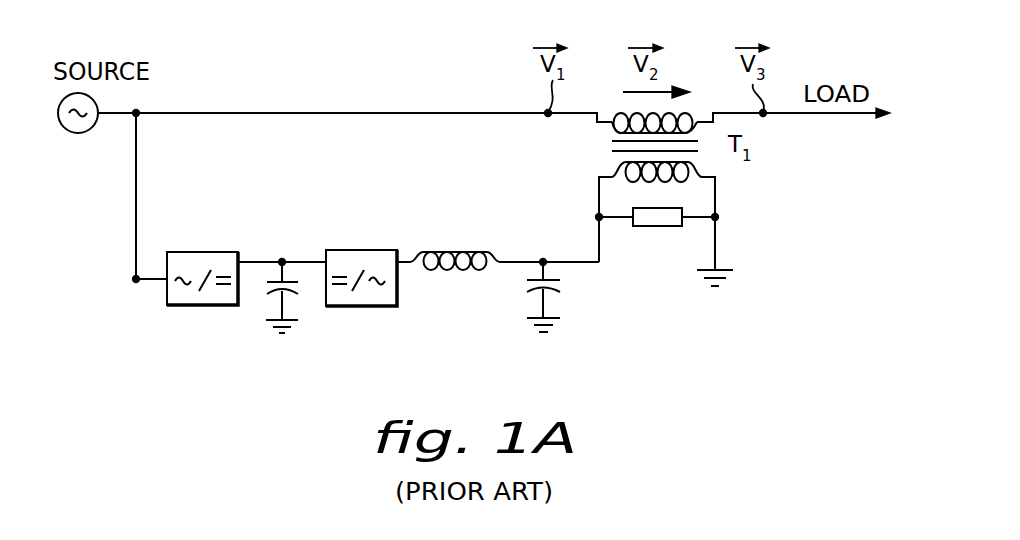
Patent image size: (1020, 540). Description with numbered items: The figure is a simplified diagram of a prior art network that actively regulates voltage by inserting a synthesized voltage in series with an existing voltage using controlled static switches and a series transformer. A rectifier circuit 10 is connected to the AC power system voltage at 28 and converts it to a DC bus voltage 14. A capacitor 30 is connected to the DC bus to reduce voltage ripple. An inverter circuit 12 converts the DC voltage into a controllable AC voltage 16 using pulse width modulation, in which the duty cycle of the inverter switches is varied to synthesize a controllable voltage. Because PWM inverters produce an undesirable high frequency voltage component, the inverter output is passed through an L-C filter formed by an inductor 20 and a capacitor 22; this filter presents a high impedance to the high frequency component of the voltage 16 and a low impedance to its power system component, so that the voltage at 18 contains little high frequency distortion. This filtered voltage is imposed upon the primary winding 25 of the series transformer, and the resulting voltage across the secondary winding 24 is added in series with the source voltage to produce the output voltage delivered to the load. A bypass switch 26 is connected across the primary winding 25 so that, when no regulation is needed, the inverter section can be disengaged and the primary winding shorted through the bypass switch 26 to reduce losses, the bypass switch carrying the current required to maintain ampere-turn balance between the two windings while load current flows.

The rectifier circuit 10 is at (207, 305).
The inverter circuit 12 is at (370, 307).
The DC bus voltage 14 is at (262, 262).
The controllable AC voltage 16 is at (407, 253).
The filtered voltage 18 is at (570, 262).
The inductor 20 is at (453, 249).
The capacitor 22 is at (522, 286).
The secondary winding 24 is at (623, 115).
The primary winding 25 is at (683, 178).
The bypass switch 26 is at (680, 226).
The AC power system voltage 28 is at (136, 280).
The capacitor 30 is at (267, 287).